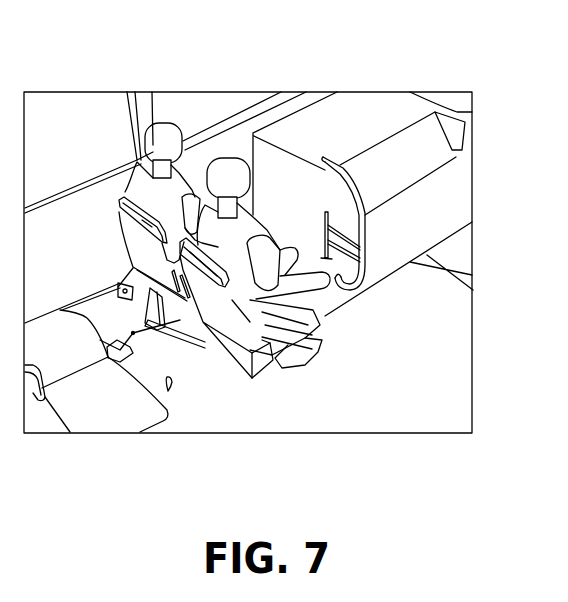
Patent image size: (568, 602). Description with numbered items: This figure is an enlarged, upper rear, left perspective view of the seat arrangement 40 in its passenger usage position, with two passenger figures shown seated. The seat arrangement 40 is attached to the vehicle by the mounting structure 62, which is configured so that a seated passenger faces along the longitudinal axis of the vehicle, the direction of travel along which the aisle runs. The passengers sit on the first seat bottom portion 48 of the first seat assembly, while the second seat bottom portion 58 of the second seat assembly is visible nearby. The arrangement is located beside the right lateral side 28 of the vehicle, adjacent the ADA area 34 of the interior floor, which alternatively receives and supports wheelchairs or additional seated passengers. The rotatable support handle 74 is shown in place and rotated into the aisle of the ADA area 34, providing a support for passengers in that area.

The right lateral side 28 is at (77, 255).
The ADA area 34 is at (372, 395).
The seat arrangement 40 is at (204, 114).
The first seat bottom portion 48 is at (275, 332).
The second seat bottom portion 58 is at (68, 357).
The mounting structure 62 is at (208, 338).
The rotatable support handle 74 is at (358, 246).